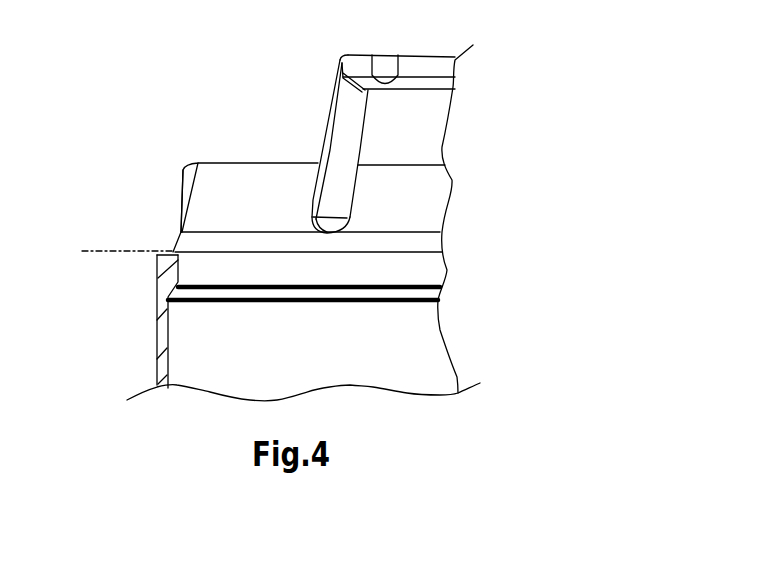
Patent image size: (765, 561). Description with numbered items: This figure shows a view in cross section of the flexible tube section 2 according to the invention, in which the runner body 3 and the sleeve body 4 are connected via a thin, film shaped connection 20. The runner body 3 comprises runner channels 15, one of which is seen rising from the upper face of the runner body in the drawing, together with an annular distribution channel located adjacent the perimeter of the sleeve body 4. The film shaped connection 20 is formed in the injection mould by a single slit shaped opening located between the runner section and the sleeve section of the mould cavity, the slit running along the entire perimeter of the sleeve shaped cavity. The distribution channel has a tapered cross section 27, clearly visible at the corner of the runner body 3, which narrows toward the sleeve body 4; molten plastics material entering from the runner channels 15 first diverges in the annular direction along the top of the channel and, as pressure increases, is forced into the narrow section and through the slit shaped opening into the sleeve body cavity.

The flexible tube section 2 is at (537, 120).
The runner body 3 is at (180, 112).
The sleeve body 4 is at (153, 333).
The runner channels 15 is at (323, 102).
The film shaped connection 20 is at (173, 252).
The tapered cross section 27 is at (183, 172).